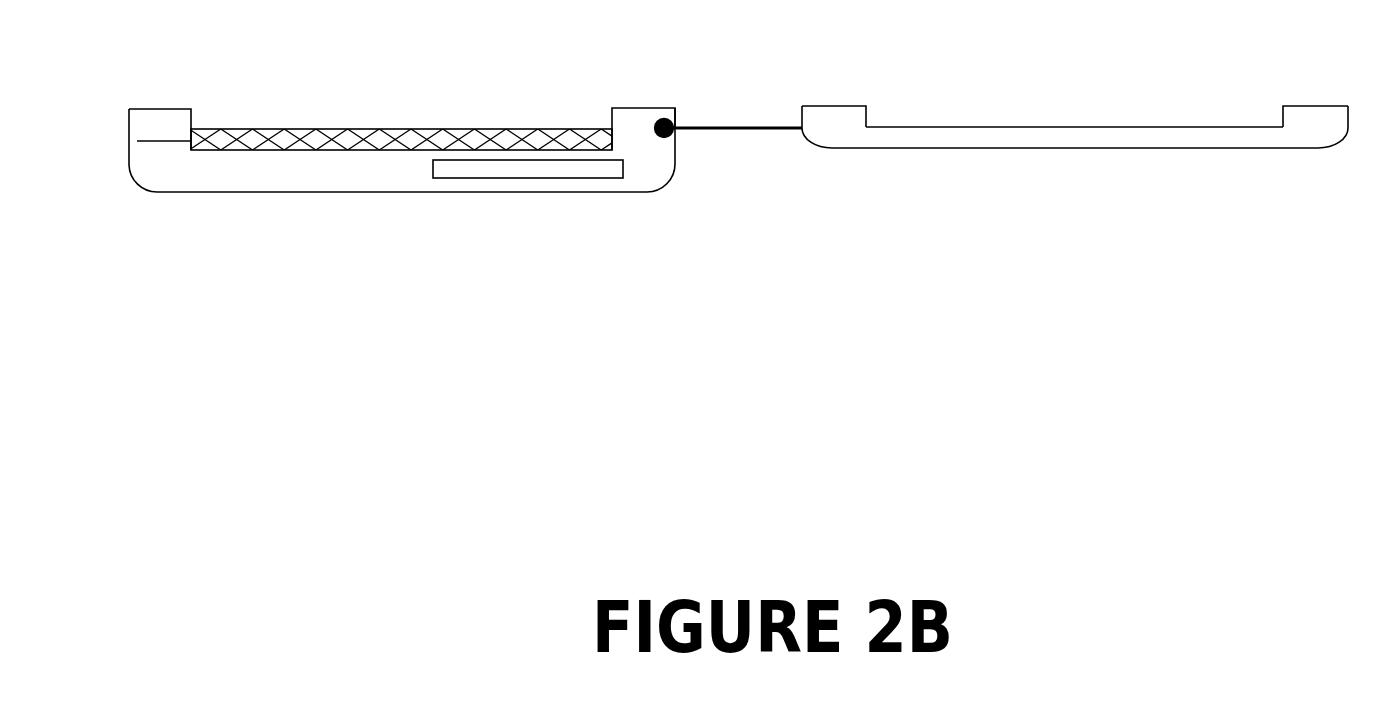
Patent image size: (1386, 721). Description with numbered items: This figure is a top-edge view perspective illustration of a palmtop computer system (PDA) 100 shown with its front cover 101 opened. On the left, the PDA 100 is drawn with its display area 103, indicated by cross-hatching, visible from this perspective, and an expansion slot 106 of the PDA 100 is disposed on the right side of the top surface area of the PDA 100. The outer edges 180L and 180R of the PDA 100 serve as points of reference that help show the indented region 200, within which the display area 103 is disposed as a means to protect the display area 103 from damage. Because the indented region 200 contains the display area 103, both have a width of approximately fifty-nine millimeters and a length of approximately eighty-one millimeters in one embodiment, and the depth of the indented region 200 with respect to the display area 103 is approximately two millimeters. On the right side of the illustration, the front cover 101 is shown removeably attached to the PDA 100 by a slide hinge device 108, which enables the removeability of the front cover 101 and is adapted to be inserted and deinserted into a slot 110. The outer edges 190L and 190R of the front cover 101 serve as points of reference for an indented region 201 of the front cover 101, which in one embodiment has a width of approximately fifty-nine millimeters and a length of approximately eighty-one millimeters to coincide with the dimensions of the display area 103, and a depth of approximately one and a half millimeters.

The palmtop computer system 100 is at (172, 172).
The front cover 101 is at (1317, 126).
The display area 103 is at (137, 141).
The expansion slot 106 is at (462, 180).
The slide hinge device 108 is at (747, 128).
The slot 110 is at (656, 136).
The outer edge 180L is at (150, 109).
The outer edge 180R is at (633, 108).
The outer edge 190L is at (823, 106).
The outer edge 190R is at (1305, 106).
The indented region 200 is at (348, 129).
The indented region 201 is at (1053, 127).